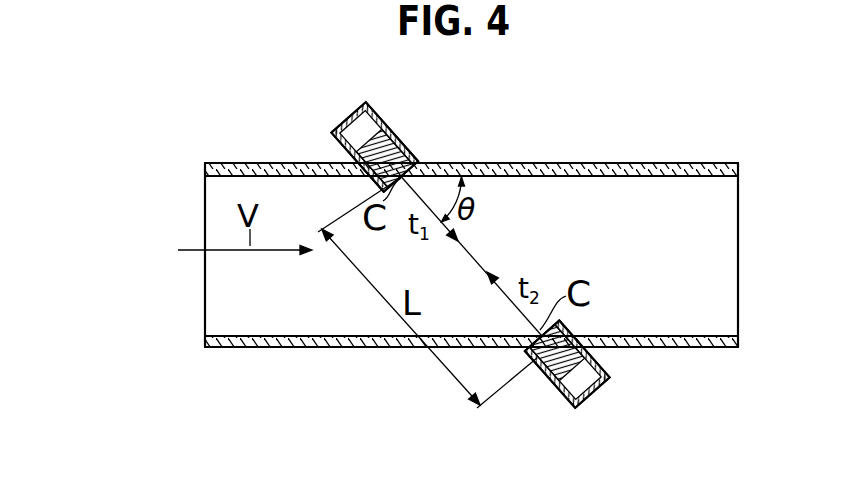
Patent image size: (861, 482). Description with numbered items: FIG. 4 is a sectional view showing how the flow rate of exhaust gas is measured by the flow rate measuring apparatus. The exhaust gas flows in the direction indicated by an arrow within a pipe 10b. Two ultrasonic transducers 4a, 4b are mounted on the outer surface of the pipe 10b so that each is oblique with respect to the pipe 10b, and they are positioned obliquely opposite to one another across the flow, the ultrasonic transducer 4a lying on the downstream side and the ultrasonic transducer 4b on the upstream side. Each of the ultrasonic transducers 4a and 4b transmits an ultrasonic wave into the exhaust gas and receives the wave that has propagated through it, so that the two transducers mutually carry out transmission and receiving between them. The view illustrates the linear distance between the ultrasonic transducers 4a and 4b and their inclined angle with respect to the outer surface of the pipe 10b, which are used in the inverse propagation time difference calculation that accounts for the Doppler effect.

The ultrasonic transducer 4a is at (607, 371).
The ultrasonic transducer 4b is at (341, 144).
The pipe 10b is at (677, 163).